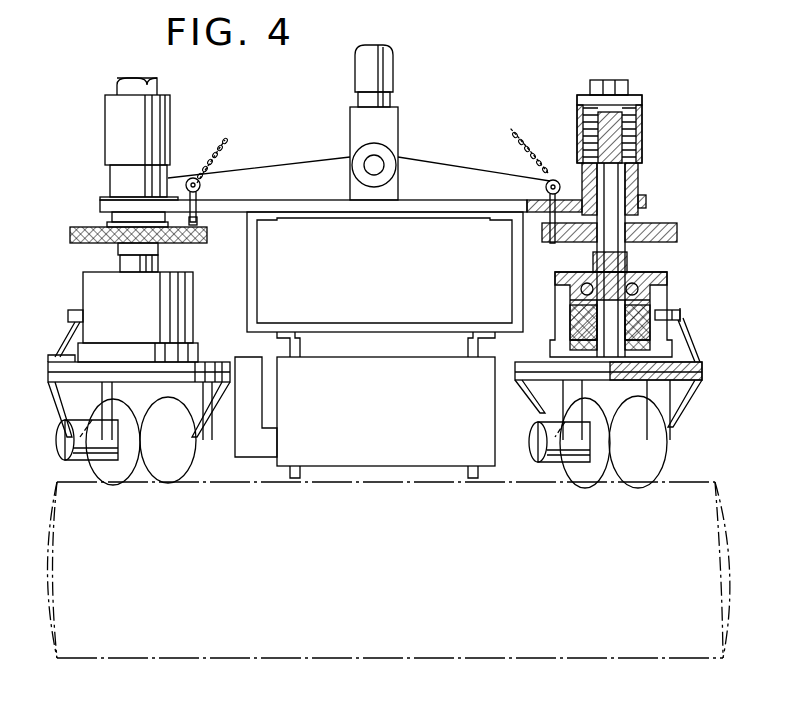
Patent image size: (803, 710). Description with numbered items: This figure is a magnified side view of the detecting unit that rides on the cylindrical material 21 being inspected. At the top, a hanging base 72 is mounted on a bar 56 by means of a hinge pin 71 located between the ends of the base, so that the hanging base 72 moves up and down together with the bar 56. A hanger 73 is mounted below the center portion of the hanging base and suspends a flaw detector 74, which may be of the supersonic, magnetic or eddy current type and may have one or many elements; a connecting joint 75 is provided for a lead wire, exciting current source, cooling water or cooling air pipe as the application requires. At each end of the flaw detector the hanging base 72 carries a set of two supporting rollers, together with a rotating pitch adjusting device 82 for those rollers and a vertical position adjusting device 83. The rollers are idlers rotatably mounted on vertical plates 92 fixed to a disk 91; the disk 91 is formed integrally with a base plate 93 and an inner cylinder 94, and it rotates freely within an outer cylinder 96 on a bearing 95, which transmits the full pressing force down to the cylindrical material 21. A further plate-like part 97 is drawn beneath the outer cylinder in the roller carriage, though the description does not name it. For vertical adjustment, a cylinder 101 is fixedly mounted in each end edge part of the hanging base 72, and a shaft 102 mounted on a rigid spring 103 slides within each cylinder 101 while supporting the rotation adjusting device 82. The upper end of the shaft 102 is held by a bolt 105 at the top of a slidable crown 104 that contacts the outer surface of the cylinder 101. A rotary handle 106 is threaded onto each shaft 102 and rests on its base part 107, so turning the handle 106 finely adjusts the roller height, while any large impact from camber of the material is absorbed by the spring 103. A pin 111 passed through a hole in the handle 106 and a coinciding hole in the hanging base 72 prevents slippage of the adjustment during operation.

The cylindrical material 21 is at (275, 648).
The bar 56 is at (375, 63).
The hinge pin 71 is at (366, 158).
The hanging base 72 is at (431, 175).
The hanger 73 is at (353, 325).
The flaw detector 74 is at (383, 455).
The connecting joint 75 is at (248, 370).
The rotating pitch adjusting device 82 is at (100, 292).
The vertical position adjusting device 83 is at (120, 183).
The disk 91 is at (668, 400).
The vertical plates 92 is at (680, 420).
The base plate 93 is at (680, 338).
The inner cylinder 94 is at (650, 300).
The bearing 95 is at (640, 272).
The outer cylinder 96 is at (558, 300).
The carriage plate 97 is at (700, 365).
The cylinder 101 is at (646, 200).
The shaft 102 is at (640, 165).
The rigid spring 103 is at (580, 128).
The slidable crown 104 is at (638, 123).
The bolt 105 is at (605, 85).
The rotary handle 106 is at (676, 232).
The base part 107 is at (595, 260).
The pin 111 is at (548, 222).